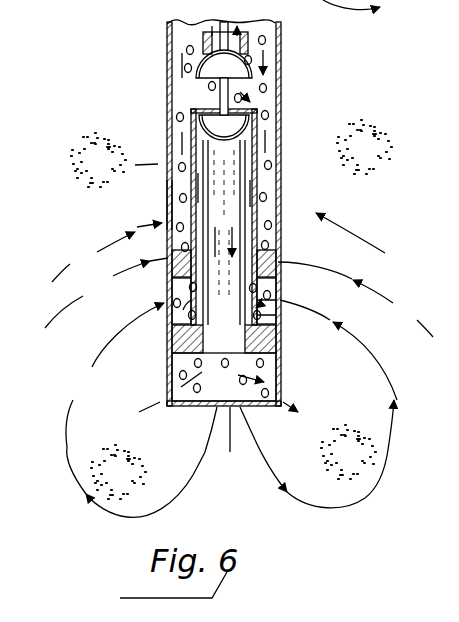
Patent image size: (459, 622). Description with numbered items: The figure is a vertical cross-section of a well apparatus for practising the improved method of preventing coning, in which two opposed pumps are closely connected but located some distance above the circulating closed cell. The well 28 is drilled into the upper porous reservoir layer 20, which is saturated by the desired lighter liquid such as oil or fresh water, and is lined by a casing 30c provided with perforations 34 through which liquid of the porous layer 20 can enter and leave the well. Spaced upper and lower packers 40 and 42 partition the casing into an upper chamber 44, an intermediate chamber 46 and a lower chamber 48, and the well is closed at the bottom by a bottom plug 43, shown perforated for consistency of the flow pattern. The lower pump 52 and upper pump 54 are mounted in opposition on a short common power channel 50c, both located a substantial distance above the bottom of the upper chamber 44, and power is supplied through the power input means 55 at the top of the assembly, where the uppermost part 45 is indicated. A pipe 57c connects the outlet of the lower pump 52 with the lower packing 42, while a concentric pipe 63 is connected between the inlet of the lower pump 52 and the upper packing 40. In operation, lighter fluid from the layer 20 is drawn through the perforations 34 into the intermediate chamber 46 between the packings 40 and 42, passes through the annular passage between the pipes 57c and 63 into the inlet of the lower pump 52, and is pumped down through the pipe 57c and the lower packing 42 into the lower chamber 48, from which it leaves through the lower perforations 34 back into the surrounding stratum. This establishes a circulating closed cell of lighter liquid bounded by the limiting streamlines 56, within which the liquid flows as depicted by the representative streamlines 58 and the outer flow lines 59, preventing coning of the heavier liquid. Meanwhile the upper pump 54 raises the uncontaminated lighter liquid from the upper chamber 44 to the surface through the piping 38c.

The porous reservoir layer 20 is at (231, 309).
The well 28 is at (171, 111).
The lower wall portion of casing 30c is at (168, 190).
The perforations 34 is at (279, 160).
The piping 38c is at (262, 38).
The upper packer 40 is at (280, 262).
The lower packer 42 is at (280, 338).
The bottom plug 43 is at (188, 406).
The upper chamber 44 is at (217, 94).
The upper stem 45 is at (227, 2).
The intermediate chamber 46 is at (279, 315).
The lower chamber 48 is at (234, 397).
The common power channel 50c is at (229, 88).
The lower pump 52 is at (224, 127).
The upper pump 54 is at (224, 64).
The power input means 55 is at (212, 42).
The limiting streamlines 56 is at (239, 297).
The pipe 57c is at (279, 283).
The representative streamlines 58 is at (239, 408).
The flow path 59 is at (231, 141).
The concentric pipe 63 is at (259, 185).